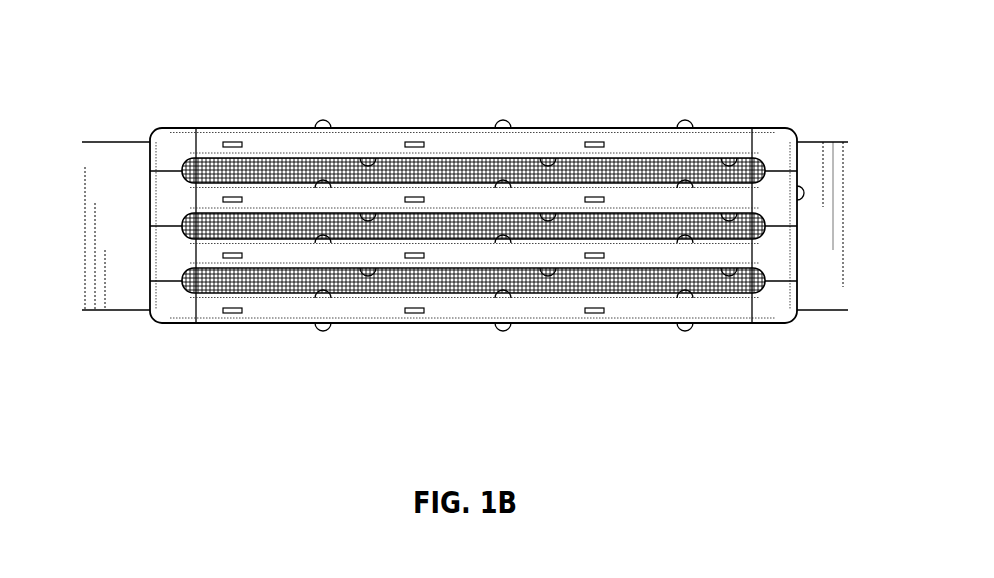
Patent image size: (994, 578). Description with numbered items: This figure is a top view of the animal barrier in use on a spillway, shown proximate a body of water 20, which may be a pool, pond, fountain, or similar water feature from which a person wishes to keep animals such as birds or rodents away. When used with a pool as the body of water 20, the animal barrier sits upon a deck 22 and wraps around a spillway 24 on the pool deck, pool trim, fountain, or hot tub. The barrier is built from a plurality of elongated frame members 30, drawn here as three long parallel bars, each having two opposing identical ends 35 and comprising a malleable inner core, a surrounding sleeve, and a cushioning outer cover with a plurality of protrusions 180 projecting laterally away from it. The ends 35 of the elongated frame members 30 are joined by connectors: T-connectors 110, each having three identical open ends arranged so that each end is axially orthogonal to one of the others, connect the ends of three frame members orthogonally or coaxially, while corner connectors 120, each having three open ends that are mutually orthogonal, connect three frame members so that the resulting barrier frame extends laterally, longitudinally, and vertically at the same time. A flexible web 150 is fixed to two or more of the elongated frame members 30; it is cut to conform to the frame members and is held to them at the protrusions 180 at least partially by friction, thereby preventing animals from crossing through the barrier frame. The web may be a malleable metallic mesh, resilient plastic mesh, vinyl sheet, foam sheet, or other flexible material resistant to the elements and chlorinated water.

The body of water 20 is at (486, 50).
The deck 22 is at (110, 202).
The spillway 24 is at (258, 157).
The elongated frame member 30 is at (430, 198).
The opposing identical ends 35 is at (205, 143).
The T-connector 110 is at (780, 207).
The corner connector 120 is at (782, 148).
The flexible web 150 is at (327, 168).
The protrusions 180 is at (687, 123).